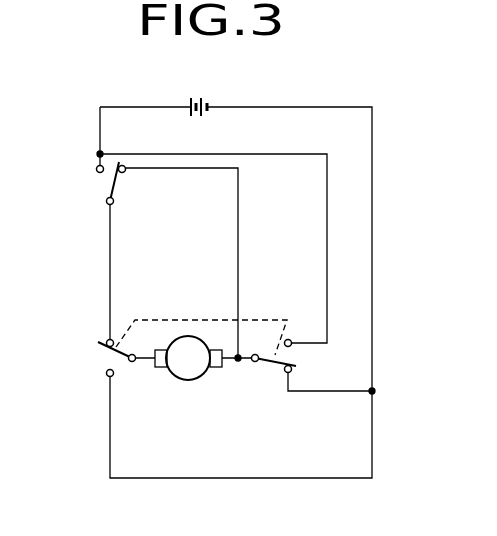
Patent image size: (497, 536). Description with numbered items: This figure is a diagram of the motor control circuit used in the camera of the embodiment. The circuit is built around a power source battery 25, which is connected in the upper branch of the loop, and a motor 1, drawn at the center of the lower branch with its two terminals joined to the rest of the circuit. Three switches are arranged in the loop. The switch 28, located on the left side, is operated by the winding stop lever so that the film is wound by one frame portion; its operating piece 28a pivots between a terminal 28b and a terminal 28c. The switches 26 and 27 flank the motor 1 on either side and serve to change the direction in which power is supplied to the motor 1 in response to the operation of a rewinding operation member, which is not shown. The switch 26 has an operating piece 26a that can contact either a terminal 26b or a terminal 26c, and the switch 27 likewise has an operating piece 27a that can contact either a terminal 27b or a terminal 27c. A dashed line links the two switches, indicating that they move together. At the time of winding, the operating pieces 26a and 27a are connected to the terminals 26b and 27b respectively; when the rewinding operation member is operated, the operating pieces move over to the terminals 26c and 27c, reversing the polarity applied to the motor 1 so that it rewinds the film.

The motor 1 is at (186, 381).
The power source battery 25 is at (197, 98).
The switch 26 is at (92, 366).
The operating piece 26a is at (133, 362).
The terminal 26b is at (106, 340).
The terminal 26c is at (108, 377).
The switch 27 is at (305, 356).
The operating piece 27a is at (253, 362).
The terminal 27b is at (287, 373).
The terminal 27c is at (290, 340).
The switch 28 is at (100, 187).
The operating piece 28a is at (114, 204).
The terminal 28b is at (96, 170).
The terminal 28c is at (126, 171).